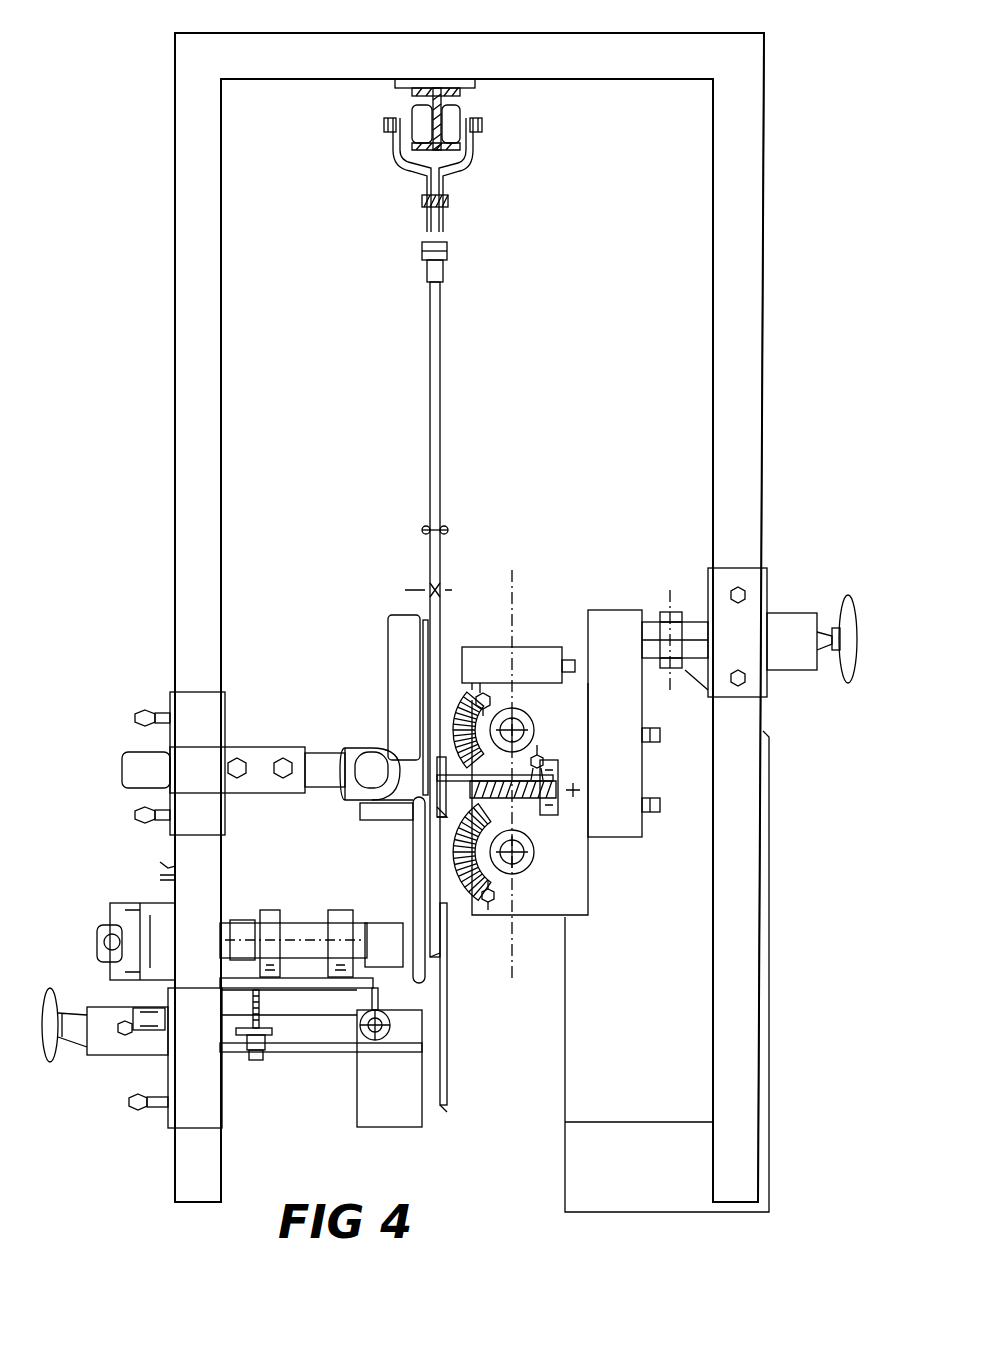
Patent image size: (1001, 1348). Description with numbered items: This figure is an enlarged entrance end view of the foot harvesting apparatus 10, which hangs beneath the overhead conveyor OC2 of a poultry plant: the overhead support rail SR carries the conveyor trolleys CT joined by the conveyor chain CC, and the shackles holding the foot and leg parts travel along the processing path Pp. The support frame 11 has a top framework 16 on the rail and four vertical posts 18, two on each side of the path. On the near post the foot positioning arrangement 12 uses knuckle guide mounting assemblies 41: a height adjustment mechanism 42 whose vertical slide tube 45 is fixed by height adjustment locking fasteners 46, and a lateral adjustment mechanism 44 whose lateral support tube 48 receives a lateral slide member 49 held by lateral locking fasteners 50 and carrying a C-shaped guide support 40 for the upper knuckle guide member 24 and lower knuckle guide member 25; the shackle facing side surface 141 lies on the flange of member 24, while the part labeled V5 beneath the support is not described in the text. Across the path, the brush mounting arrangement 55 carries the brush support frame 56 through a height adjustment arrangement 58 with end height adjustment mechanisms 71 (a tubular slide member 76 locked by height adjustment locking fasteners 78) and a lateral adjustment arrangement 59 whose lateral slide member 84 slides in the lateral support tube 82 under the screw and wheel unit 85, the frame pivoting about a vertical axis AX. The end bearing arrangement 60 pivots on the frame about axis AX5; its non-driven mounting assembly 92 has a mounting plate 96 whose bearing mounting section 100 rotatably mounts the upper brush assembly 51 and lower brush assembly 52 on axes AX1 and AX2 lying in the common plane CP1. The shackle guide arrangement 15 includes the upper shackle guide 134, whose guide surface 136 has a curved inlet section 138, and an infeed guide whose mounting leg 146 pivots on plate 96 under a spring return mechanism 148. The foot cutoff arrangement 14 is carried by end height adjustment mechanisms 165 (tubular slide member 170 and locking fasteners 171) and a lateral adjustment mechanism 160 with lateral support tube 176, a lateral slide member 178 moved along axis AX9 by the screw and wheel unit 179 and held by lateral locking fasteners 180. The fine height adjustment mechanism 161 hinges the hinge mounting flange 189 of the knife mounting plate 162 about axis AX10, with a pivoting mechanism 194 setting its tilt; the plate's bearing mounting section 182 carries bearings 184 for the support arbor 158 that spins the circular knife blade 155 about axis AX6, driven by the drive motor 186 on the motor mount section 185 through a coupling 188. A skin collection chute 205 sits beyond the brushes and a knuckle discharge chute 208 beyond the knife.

The foot harvesting apparatus 10 is at (143, 640).
The support frame 11 is at (173, 32).
The foot positioning arrangement 12 is at (364, 726).
The foot cutoff arrangement 14 is at (456, 1080).
The shackle guide arrangement 15 is at (457, 637).
The top framework 16 is at (560, 46).
The vertical posts 18 is at (178, 323).
The upper knuckle guide member 24 is at (386, 640).
The lower knuckle guide member 25 is at (411, 883).
The C-shaped guide supports 40 is at (360, 808).
The knuckle guide mounting assemblies 41 is at (236, 746).
The height adjustment mechanism 42 is at (227, 692).
The lateral adjustment mechanism 44 is at (322, 750).
The vertical slide tube 45 is at (205, 692).
The height adjustment locking fasteners 46 is at (150, 710).
The lateral support tube 48 is at (287, 796).
The lateral slide member 49 is at (352, 798).
The lateral locking fasteners 50 is at (260, 776).
The upper brush assembly 51 is at (452, 720).
The lower brush assembly 52 is at (450, 854).
The brush mounting arrangement 55 is at (446, 551).
The brush support frame 56 is at (623, 608).
The height adjustment arrangement 58 is at (770, 568).
The lateral adjustment arrangement 59 is at (792, 612).
The end bearing arrangement 60 is at (596, 920).
The end height adjustment mechanisms 71 is at (770, 700).
The tubular slide member 76 is at (767, 688).
The height adjustment locking fasteners 78 is at (740, 587).
The lateral support tube 82 is at (822, 668).
The lateral slide member 84 is at (710, 640).
The lateral adjustment screw and wheel unit 85 is at (851, 600).
The non-driven mounting assembly 92 is at (590, 857).
The mounting plate 96 is at (590, 882).
The bearing mounting section 100 is at (592, 915).
The upper shackle guide 134 is at (572, 660).
The guide surface 136 is at (505, 647).
The inlet section 138 is at (556, 680).
The shackle facing side surface 141 is at (423, 673).
The mounting leg 146 is at (548, 772).
The spring return mechanism 148 is at (534, 852).
The circular knife blade 155 is at (438, 926).
The support arbor 158 is at (402, 924).
The lateral adjustment mechanism 160 is at (86, 1010).
The fine height adjustment mechanism 161 is at (395, 1025).
The knife mounting plate 162 is at (164, 868).
The end height adjustment mechanisms 165 is at (168, 1140).
The tubular slide member 170 is at (176, 1068).
The height adjustment locking fasteners 171 is at (150, 1102).
The lateral support tube 176 is at (114, 1056).
The lateral slide member 178 is at (256, 1062).
The lateral adjustment screw and wheel unit 179 is at (55, 1063).
The lateral locking fasteners 180 is at (122, 1021).
The bearing mounting section 182 is at (300, 1043).
The bearings 184 is at (333, 910).
The motor mount section 185 is at (165, 878).
The drive motor 186 is at (110, 920).
The coupling 188 is at (240, 912).
The hinge mounting flange 189 is at (386, 1000).
The pivoting mechanism 194 is at (248, 1070).
The skin collection chute 205 is at (568, 1122).
The knuckle discharge chute 208 is at (376, 1127).
The overhead support rail SR is at (445, 93).
The conveyor trolleys CT is at (470, 157).
The conveyor chain CC is at (450, 203).
The overhead conveyor OC2 is at (428, 223).
The processing path Pp is at (428, 588).
The common plane CP1 is at (517, 602).
The axis AX is at (672, 688).
The rotational axis AX1 is at (518, 728).
The rotational axis AX2 is at (526, 864).
The pivot axis AX5 is at (578, 790).
The rotational axis AX6 is at (333, 930).
The horizontal adjustment axis AX9 is at (330, 1048).
The pivot axis AX10 is at (382, 1050).
The valve V5 is at (435, 815).